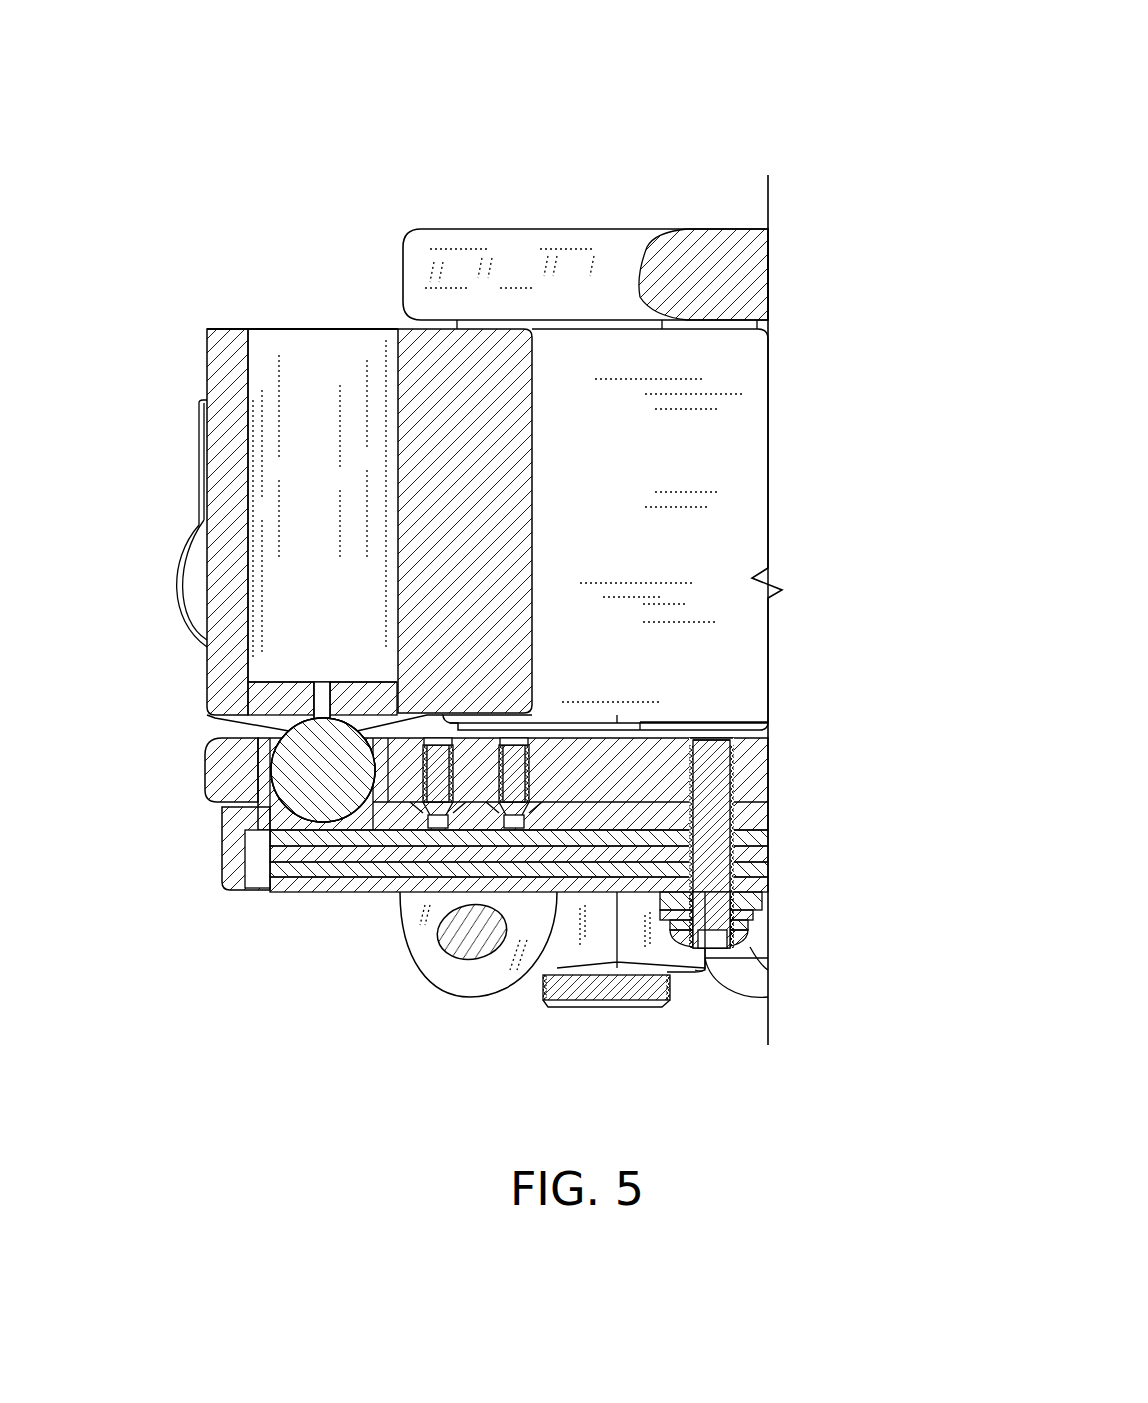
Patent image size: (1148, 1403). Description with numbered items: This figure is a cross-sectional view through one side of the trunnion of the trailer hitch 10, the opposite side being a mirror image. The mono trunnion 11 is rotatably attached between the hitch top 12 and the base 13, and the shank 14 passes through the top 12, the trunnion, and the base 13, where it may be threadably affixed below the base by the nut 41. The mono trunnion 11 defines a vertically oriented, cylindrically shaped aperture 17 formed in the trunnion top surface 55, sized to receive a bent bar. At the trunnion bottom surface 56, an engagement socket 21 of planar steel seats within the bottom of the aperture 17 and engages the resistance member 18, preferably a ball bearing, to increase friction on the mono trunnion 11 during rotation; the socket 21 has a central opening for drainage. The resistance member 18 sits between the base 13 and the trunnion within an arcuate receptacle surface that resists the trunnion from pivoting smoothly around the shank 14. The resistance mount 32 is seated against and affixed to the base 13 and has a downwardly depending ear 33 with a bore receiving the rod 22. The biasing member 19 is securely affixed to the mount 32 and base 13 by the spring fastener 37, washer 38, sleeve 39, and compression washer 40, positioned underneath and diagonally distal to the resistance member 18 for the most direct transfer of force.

The trailer hitch 10 is at (268, 68).
The mono trunnion 11 is at (402, 330).
The hitch top 12 is at (543, 247).
The base 13 is at (212, 770).
The shank 14 is at (615, 1000).
The apertures 17 is at (301, 320).
The resistance member 18 is at (322, 724).
The biasing member 19 is at (315, 893).
The engagement sockets 21 is at (283, 684).
The rod 22 is at (490, 925).
The resistance mount 32 is at (222, 865).
The ear 33 is at (485, 995).
The spring fastener 37 is at (762, 957).
The washer 38 is at (760, 925).
The sleeve 39 is at (760, 916).
The compression washer 40 is at (765, 902).
The nut 41 is at (695, 965).
The trunnion top surface 55 is at (213, 322).
The trunnion bottom surface 56 is at (216, 722).